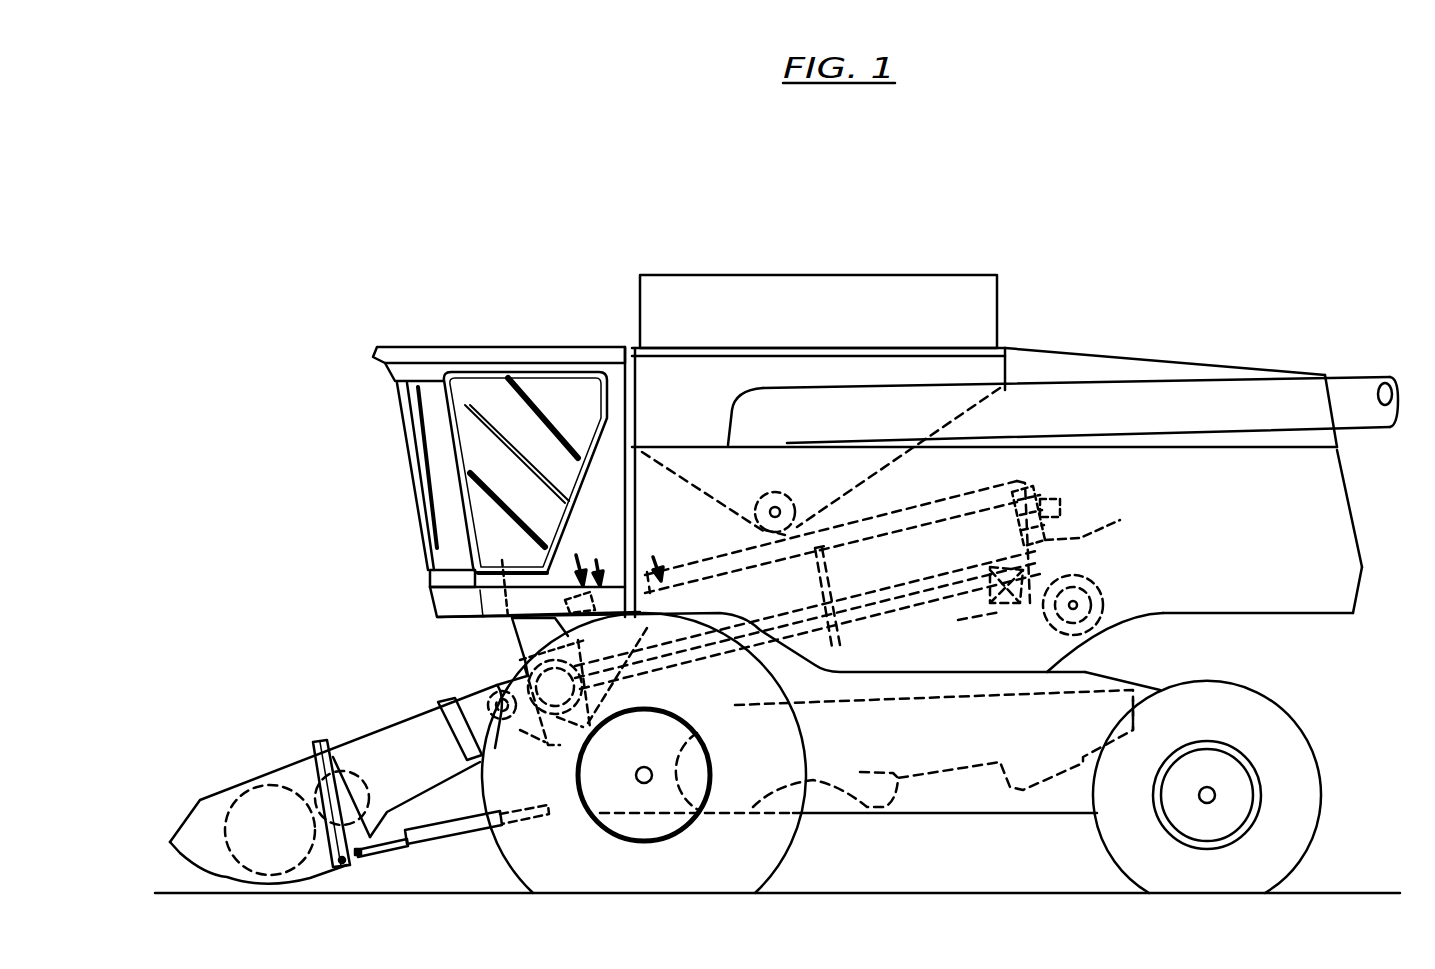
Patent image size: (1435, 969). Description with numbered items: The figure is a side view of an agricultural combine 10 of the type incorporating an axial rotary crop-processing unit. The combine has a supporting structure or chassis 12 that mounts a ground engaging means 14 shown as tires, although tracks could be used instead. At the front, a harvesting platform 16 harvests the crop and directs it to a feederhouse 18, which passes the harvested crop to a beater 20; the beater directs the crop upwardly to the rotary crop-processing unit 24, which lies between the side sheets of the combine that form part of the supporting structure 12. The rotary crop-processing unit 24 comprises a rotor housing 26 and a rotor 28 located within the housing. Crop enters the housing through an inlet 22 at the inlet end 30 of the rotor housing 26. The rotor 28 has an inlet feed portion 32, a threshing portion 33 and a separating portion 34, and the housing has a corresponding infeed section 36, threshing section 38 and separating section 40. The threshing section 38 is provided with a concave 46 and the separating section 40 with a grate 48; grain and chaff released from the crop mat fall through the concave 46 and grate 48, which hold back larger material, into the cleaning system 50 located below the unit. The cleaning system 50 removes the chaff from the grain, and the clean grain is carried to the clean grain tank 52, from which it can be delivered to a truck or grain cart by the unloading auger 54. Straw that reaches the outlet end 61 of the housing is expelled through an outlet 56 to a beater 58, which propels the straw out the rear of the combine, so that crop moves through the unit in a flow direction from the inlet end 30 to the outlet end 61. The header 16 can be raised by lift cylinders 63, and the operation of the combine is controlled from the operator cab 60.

The agricultural combine 10 is at (1113, 298).
The supporting structure or chassis 12 is at (825, 698).
The ground engaging means 14 is at (785, 847).
The harvesting platform 16 is at (203, 800).
The feederhouse 18 is at (407, 717).
The beater 20 is at (523, 675).
The inlet 22 is at (513, 633).
The rotary crop-processing unit 24 is at (870, 513).
The rotor housing 26 is at (978, 492).
The rotor 28 is at (1030, 482).
The inlet end 30 is at (508, 574).
The inlet feed portion 32 is at (592, 565).
The threshing portion 33 is at (660, 528).
The separating portion 34 is at (825, 545).
The infeed section 36 is at (572, 560).
The threshing section 38 is at (722, 552).
The separating section 40 is at (855, 518).
The concave 46 is at (742, 670).
The grate 48 is at (958, 627).
The cleaning system 50 is at (940, 690).
The clean grain tank 52 is at (704, 410).
The unloading auger 54 is at (1171, 422).
The outlet 56 is at (1036, 566).
The beater 58 is at (1105, 590).
The operator cab 60 is at (541, 446).
The outlet end 61 is at (1060, 543).
The lift cylinders 63 is at (428, 850).